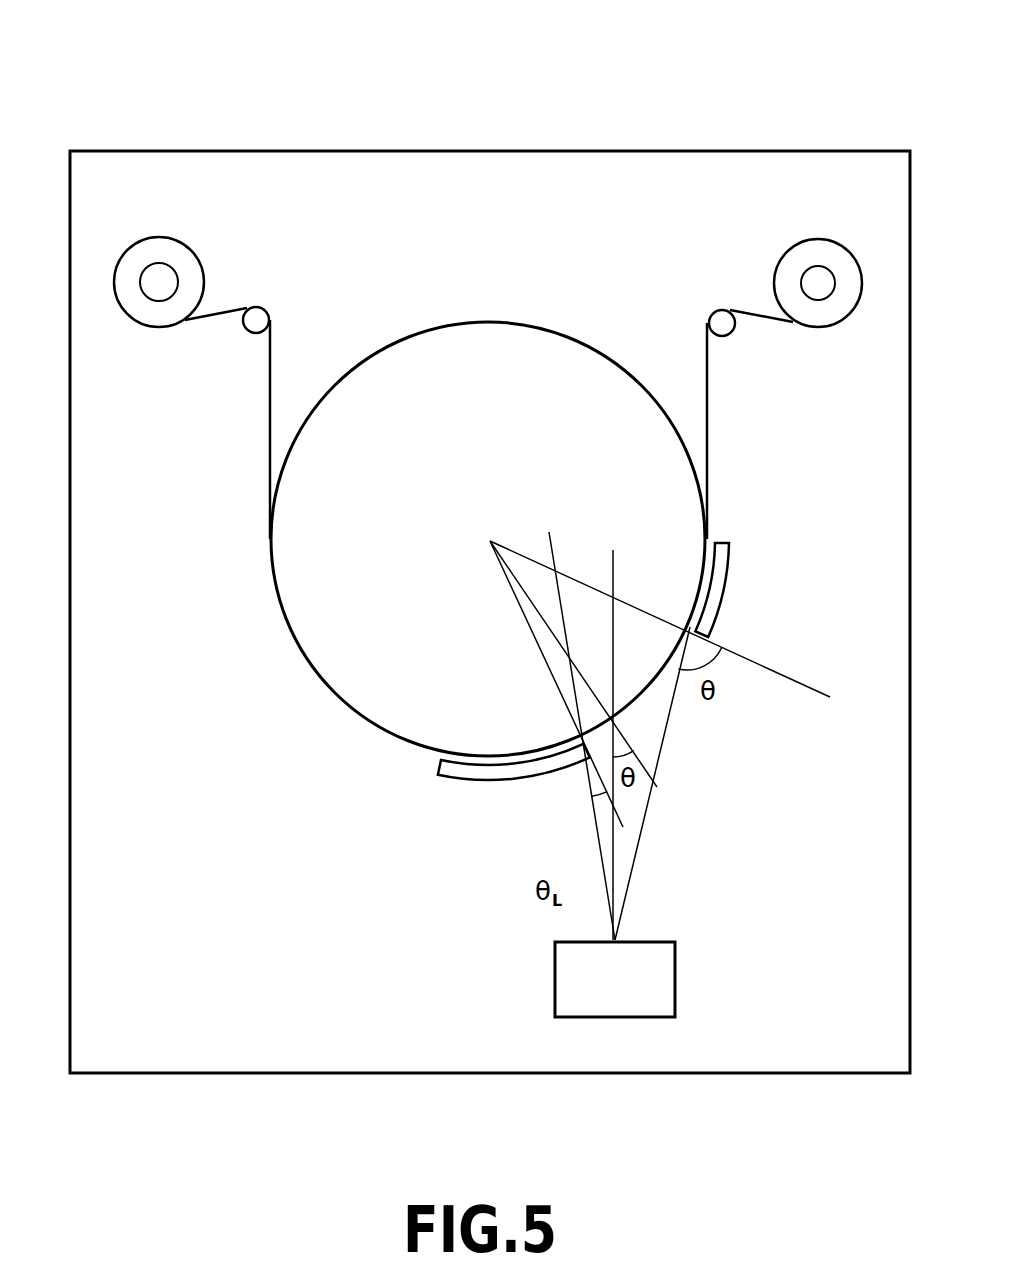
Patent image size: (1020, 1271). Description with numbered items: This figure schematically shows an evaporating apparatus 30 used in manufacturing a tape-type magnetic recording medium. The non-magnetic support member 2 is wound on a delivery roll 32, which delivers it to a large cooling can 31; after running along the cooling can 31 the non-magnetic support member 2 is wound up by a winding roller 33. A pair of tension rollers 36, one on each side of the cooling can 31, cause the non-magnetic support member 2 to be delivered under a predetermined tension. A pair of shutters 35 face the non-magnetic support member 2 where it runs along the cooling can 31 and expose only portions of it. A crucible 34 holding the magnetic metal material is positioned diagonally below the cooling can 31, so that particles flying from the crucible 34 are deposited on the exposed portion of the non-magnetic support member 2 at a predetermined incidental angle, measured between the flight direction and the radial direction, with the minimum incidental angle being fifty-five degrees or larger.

The evaporating apparatus 30 is at (684, 146).
The cooling can 31 is at (556, 364).
The delivery roll 32 is at (188, 258).
The winding roller 33 is at (830, 256).
The crucible 34 is at (660, 983).
The shutters 35 is at (717, 585).
The tension rollers 36 is at (260, 320).
The non-magnetic support member 2 is at (202, 320).